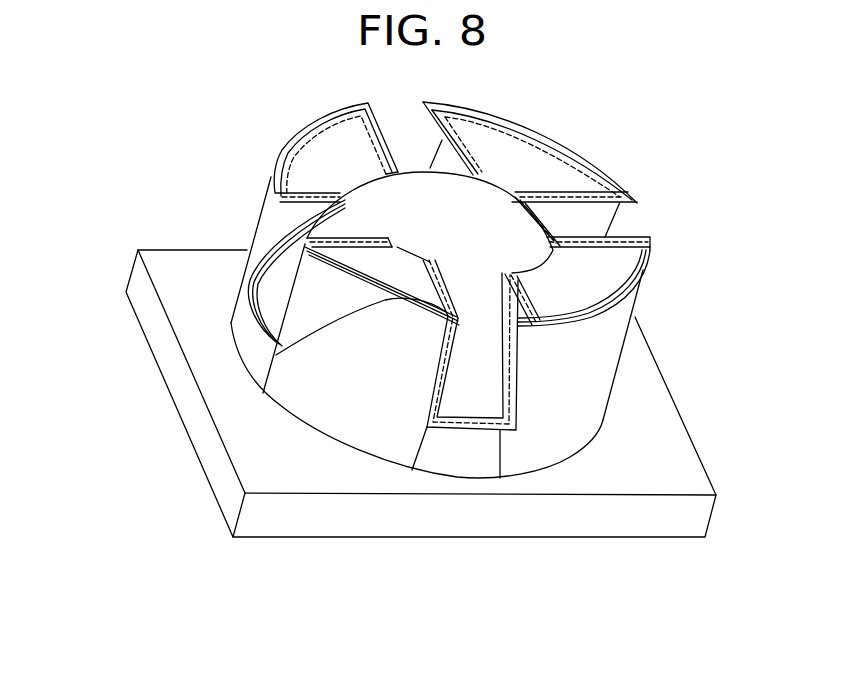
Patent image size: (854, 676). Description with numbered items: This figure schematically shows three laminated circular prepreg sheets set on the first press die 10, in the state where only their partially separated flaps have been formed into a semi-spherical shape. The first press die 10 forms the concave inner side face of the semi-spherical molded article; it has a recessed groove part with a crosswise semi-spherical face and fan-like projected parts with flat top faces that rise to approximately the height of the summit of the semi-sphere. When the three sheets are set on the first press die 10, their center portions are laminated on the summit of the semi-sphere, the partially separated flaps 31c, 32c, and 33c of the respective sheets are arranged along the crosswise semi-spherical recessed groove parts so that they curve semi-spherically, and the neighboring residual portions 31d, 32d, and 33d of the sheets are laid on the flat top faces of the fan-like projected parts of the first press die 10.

The first press die 10 is at (712, 378).
The residual portion 31d is at (305, 243).
The residual portion 32d is at (332, 266).
The residual portion 33d is at (372, 286).
The partially separated flap 31c is at (460, 403).
The partially separated flap 32c is at (485, 420).
The partially separated flap 33c is at (495, 427).